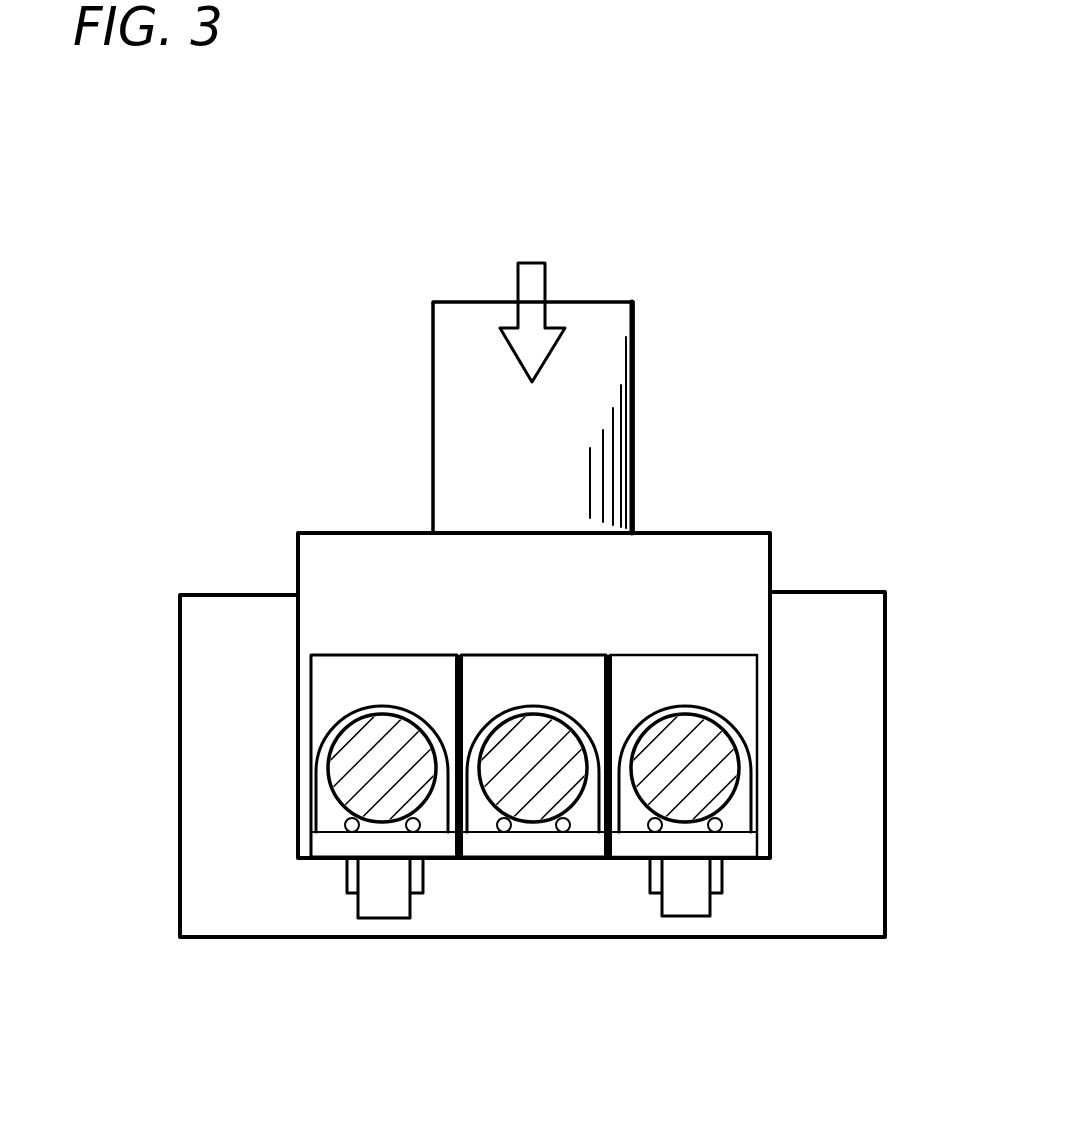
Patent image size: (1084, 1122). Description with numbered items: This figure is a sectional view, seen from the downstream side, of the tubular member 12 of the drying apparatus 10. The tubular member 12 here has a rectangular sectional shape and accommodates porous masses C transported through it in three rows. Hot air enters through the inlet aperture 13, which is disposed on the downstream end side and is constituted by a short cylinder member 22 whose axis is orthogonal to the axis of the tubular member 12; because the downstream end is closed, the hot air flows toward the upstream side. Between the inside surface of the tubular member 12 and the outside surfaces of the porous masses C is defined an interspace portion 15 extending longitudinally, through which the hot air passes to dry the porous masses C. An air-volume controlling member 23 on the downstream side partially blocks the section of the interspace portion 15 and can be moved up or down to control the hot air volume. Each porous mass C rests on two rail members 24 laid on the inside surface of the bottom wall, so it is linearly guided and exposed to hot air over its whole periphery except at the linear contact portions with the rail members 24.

The drying apparatus 10 is at (805, 386).
The tubular member 12 is at (743, 652).
The inlet aperture 13 is at (592, 297).
The interspace portion 15 is at (335, 718).
The short cylinder member 22 is at (637, 417).
The air-volume controlling member 23 is at (383, 670).
The rail members 24 is at (425, 838).
The porous masses C is at (327, 758).